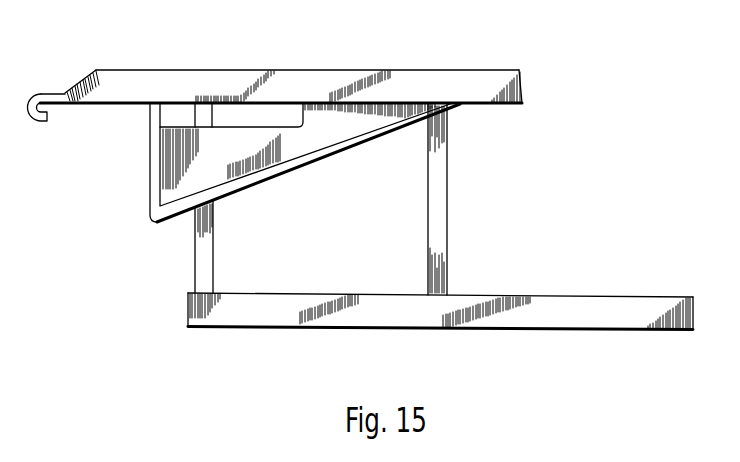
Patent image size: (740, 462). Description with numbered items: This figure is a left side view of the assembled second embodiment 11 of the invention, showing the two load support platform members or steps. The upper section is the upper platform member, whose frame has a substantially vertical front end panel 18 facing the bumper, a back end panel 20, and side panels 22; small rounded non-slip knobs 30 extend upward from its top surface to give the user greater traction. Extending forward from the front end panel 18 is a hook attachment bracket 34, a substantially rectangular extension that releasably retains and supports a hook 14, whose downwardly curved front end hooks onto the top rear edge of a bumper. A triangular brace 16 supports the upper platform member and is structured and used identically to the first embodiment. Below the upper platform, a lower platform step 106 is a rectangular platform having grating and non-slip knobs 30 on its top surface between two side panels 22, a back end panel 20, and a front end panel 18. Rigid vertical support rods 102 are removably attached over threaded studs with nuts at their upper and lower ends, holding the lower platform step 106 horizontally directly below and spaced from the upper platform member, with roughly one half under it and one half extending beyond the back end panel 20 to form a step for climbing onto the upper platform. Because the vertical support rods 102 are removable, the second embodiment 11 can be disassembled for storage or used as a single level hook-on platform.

The second embodiment 11 is at (449, 167).
The attachment hook 14 is at (48, 119).
The triangular brace 16 is at (178, 191).
The front end panel 18 is at (92, 68).
The back end panel 20 is at (522, 82).
The side panel 22 is at (430, 88).
The non-slip knob 30 is at (203, 69).
The hook attachment bracket 34 is at (80, 86).
The vertical support rod 102 is at (448, 229).
The lower platform step 106 is at (590, 310).